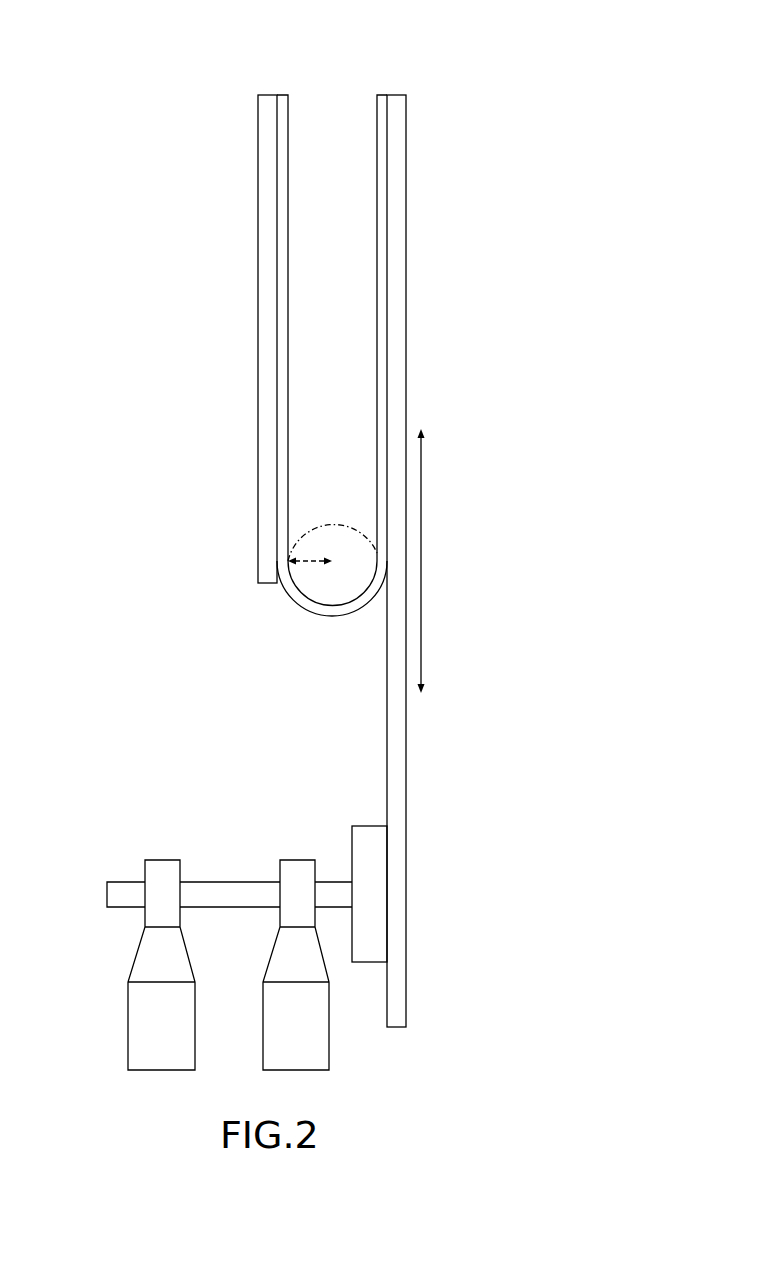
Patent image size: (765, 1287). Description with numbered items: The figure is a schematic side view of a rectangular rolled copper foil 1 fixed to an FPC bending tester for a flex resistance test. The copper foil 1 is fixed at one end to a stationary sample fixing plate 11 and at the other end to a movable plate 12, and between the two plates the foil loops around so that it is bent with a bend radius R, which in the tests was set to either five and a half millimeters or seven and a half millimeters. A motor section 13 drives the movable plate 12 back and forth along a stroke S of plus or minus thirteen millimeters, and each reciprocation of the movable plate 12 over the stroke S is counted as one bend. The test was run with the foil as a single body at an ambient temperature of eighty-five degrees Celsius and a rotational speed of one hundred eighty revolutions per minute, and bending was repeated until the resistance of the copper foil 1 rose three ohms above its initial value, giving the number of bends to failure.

The rectangular rolled copper foil 1 is at (384, 93).
The sample fixing plate 11 is at (258, 272).
The movable plate 12 is at (407, 277).
The motor section 13 is at (248, 882).
The bend radius R is at (312, 559).
The stroke S is at (422, 547).